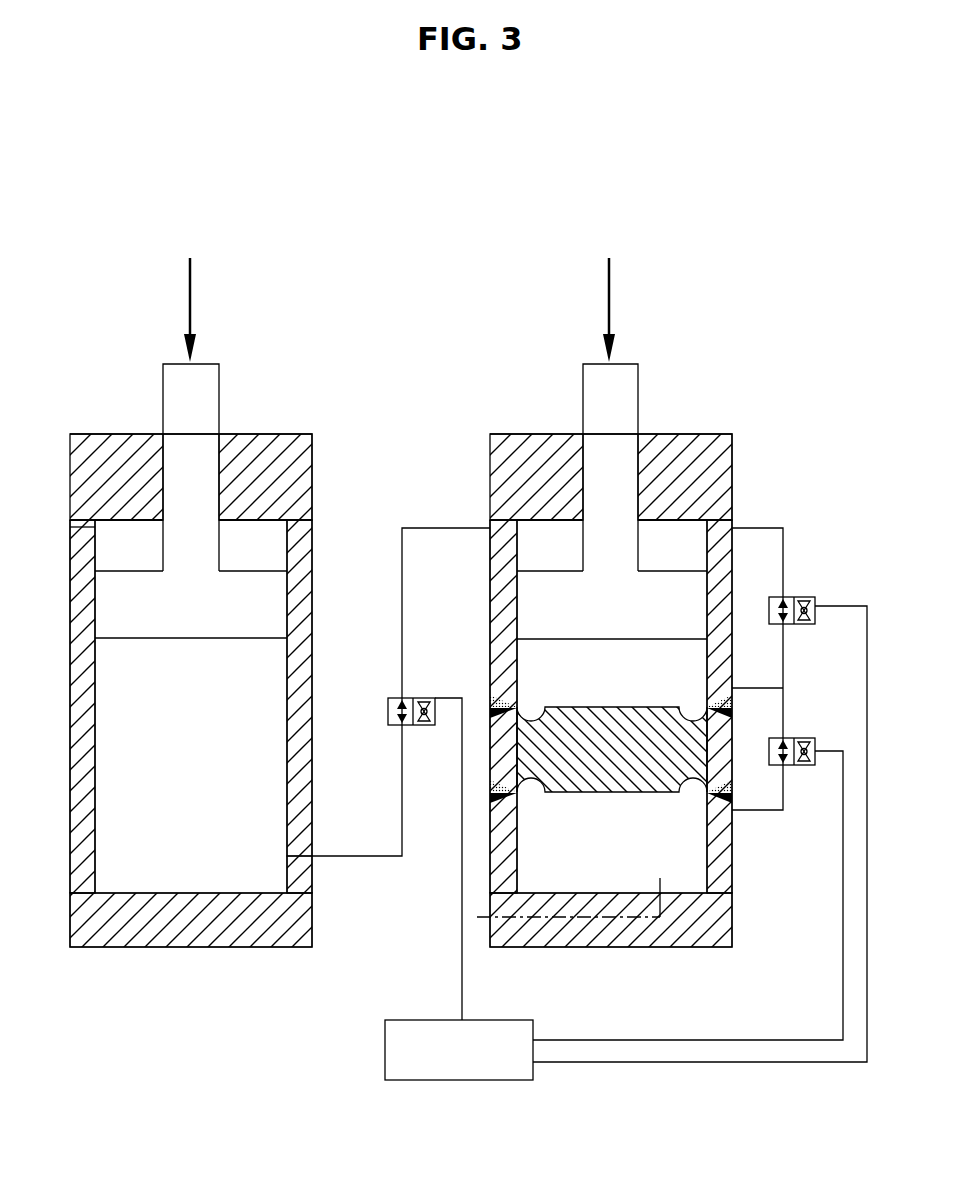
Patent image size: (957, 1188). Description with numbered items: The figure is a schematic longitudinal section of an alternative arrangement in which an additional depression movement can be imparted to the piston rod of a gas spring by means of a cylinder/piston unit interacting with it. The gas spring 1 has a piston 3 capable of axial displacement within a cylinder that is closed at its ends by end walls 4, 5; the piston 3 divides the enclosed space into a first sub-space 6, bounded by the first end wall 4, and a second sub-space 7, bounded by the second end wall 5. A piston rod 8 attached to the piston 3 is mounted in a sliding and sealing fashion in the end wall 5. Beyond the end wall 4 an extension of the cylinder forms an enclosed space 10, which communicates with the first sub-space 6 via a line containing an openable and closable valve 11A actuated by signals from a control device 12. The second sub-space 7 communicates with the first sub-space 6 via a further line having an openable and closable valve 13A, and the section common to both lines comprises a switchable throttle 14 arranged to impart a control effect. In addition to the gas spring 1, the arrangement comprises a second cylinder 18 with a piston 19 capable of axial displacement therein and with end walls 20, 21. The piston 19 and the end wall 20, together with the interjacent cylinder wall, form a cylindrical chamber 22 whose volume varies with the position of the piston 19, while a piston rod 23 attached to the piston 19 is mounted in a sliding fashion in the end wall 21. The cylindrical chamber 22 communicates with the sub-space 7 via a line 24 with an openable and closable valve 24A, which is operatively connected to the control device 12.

The gas spring 1 is at (626, 659).
The piston 3 is at (535, 594).
The first end wall 4 is at (558, 748).
The second end wall 5 is at (520, 462).
The first sub-space 6 is at (545, 658).
The second sub-space 7 is at (545, 540).
The piston rod 8 is at (625, 390).
The enclosed space 10 is at (683, 856).
The valve 11A is at (800, 738).
The control device 12 is at (512, 1062).
The valve 13A is at (788, 597).
The switchable throttle 14 is at (752, 682).
The second cylinder 18 is at (290, 552).
The piston 19 is at (248, 608).
The end wall 20 is at (192, 932).
The end wall 21 is at (255, 450).
The cylindrical chamber 22 is at (253, 752).
The piston rod 23 is at (205, 380).
The line 24 is at (361, 858).
The valve 24A is at (423, 727).